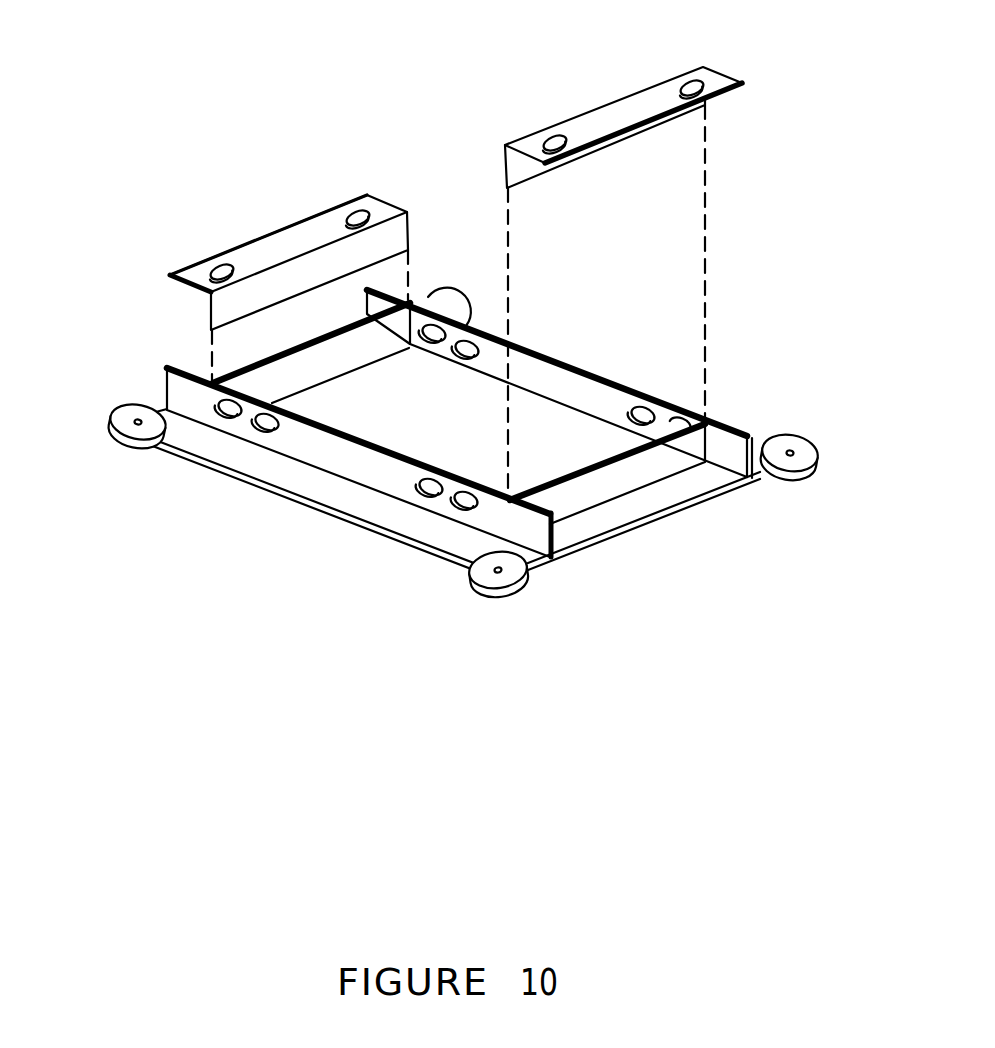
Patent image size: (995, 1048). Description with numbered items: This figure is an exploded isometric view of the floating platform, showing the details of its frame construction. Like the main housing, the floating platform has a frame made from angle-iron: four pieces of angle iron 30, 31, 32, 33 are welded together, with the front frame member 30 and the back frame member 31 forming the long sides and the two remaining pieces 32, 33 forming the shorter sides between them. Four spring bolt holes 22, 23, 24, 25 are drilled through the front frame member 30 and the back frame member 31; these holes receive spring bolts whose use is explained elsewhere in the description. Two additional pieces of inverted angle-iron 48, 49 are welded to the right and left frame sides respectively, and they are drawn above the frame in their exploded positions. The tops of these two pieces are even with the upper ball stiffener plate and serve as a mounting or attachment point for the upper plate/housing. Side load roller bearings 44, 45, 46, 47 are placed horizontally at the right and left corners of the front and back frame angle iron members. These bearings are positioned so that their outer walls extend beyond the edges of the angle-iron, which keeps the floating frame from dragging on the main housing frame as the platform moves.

The spring bolt hole 22 is at (466, 512).
The spring bolt hole 23 is at (262, 432).
The spring bolt hole 24 is at (426, 498).
The spring bolt hole 25 is at (222, 420).
The front frame member 30 is at (588, 368).
The back frame member 31 is at (357, 448).
The angle iron frame piece 32 is at (607, 457).
The angle iron frame piece 33 is at (226, 377).
The side load roller bearing 44 is at (818, 450).
The side load roller bearing 45 is at (428, 297).
The side load roller bearing 46 is at (517, 602).
The side load roller bearing 47 is at (120, 404).
The inverted angle-iron piece 48 is at (720, 73).
The inverted angle-iron piece 49 is at (283, 228).